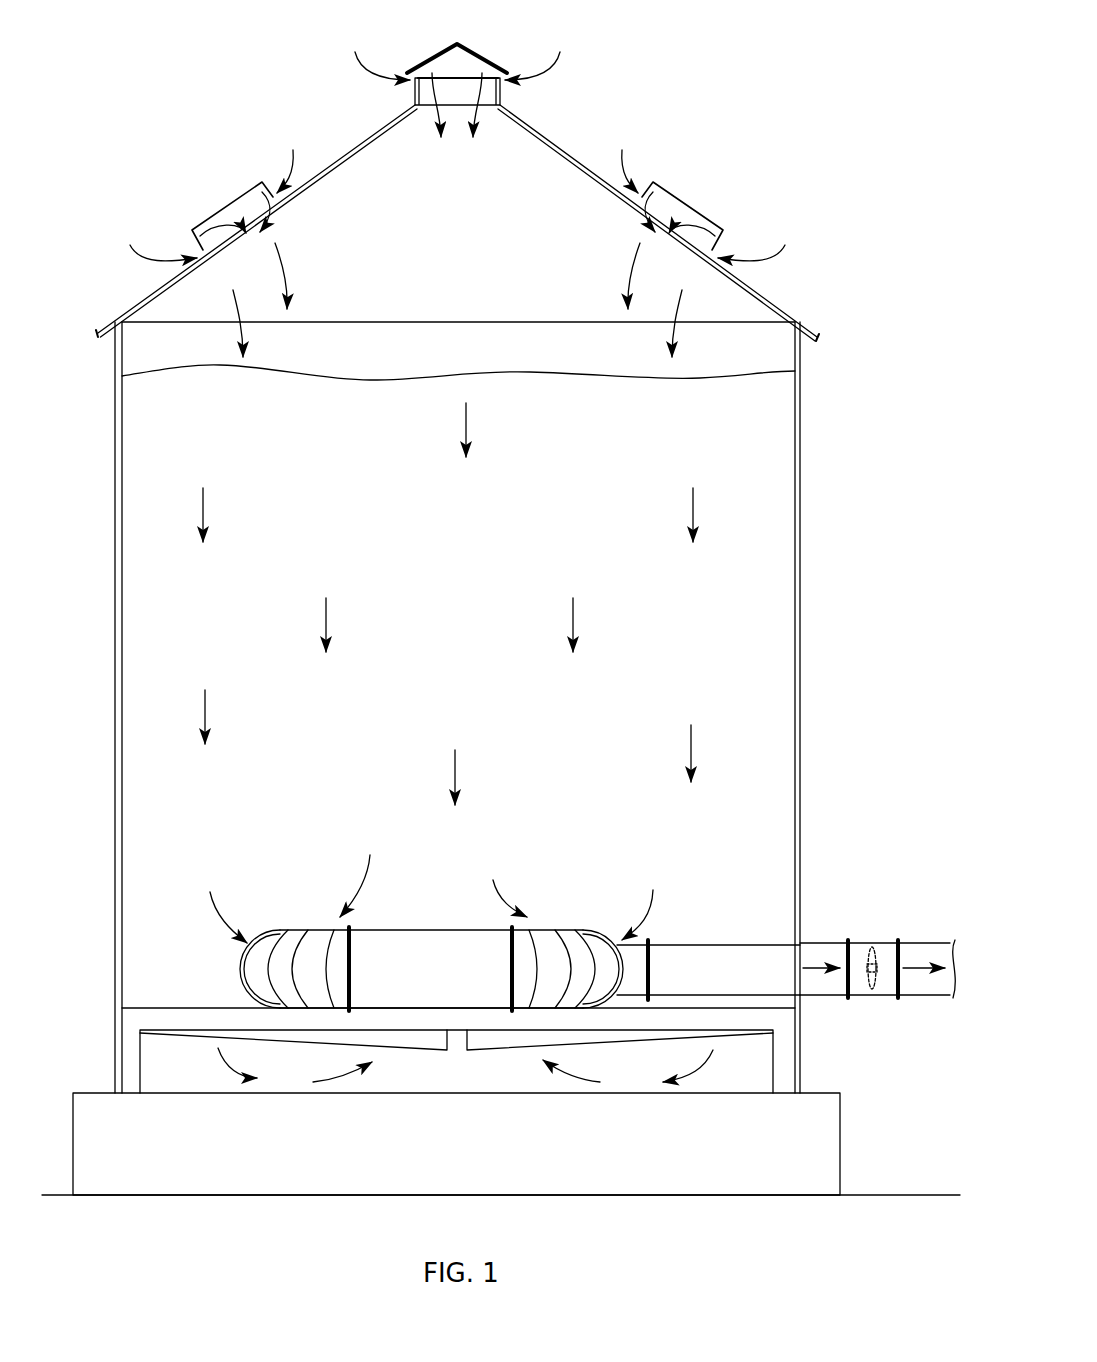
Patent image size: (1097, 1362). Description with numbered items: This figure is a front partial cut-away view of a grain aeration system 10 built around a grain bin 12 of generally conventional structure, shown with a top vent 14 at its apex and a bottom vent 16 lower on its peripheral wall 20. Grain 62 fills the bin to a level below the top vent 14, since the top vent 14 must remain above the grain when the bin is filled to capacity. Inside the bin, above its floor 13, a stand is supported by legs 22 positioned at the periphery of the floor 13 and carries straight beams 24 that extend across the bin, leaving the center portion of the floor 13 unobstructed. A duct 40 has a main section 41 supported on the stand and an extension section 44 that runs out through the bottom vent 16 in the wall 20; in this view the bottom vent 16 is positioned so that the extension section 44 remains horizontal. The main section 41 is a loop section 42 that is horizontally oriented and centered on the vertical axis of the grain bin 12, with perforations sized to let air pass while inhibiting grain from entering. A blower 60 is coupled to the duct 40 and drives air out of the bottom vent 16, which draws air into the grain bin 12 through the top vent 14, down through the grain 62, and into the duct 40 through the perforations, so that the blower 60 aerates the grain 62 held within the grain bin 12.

The grain aeration system 10 is at (822, 232).
The grain bin 12 is at (760, 488).
The floor 13 is at (420, 1093).
The top vent 14 is at (213, 190).
The bottom vent 16 is at (808, 937).
The bin wall 20 is at (800, 650).
The legs 22 is at (133, 1068).
The beams 24 is at (200, 1012).
The duct 40 is at (663, 922).
The main section 41 is at (318, 932).
The loop section 42 is at (543, 947).
The extension section 44 is at (720, 942).
The blower 60 is at (872, 998).
The grain 62 is at (770, 430).